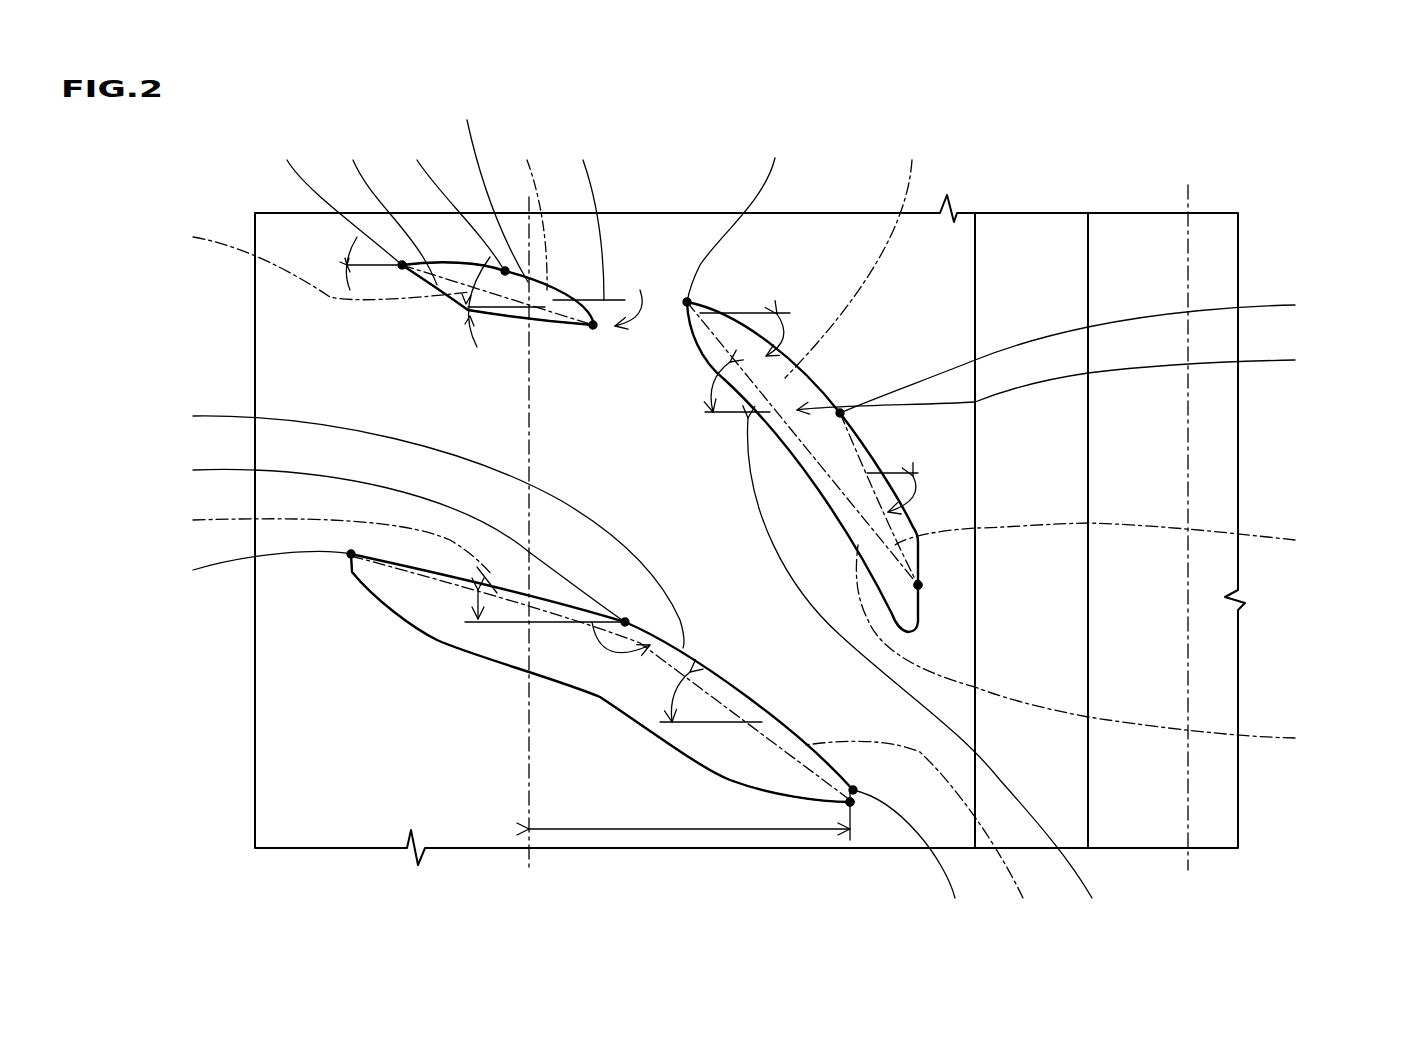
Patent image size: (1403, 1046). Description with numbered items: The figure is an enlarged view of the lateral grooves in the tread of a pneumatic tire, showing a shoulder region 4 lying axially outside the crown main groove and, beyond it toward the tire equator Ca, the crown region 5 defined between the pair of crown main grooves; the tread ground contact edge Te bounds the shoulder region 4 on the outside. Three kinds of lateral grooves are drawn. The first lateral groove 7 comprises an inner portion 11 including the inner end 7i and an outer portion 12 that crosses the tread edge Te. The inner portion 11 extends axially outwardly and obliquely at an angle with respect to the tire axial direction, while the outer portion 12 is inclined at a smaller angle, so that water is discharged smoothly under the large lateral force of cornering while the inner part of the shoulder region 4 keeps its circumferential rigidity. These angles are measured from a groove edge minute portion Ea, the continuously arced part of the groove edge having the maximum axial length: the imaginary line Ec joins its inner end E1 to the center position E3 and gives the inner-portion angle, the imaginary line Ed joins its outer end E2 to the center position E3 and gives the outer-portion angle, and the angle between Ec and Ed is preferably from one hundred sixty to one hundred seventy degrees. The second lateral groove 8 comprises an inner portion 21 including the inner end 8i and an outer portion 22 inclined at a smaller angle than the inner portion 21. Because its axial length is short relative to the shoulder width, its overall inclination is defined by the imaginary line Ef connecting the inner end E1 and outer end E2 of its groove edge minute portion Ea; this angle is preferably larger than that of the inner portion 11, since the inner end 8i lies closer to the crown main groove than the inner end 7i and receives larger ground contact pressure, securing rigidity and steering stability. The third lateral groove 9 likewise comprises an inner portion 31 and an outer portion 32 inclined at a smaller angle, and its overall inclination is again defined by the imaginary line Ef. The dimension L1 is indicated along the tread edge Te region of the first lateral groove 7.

The shoulder region 4 is at (850, 705).
The crown region 5 is at (1146, 797).
The first lateral groove 7 is at (723, 743).
The second lateral groove 8 is at (845, 410).
The third lateral groove 9 is at (162, 303).
The inner portion 11 is at (790, 780).
The outer portion 12 is at (448, 619).
The inner portion 21 is at (885, 456).
The outer portion 22 is at (928, 674).
The inner portion 31 is at (510, 325).
The outer portion 32 is at (485, 320).
The inner end 7i is at (850, 802).
The inner end 8i is at (918, 585).
The inner end of groove edge E1 is at (770, 530).
The outer end of groove edge E2 is at (472, 357).
The center position of groove edge E3 is at (745, 376).
The groove edge minute portion Ea is at (744, 370).
The imaginary line Ec is at (918, 530).
The imaginary line Ed is at (541, 362).
The imaginary line Ef is at (743, 487).
The length L1 is at (690, 832).
The tread ground contact edge Te is at (527, 862).
The tire equator Ca is at (1184, 513).